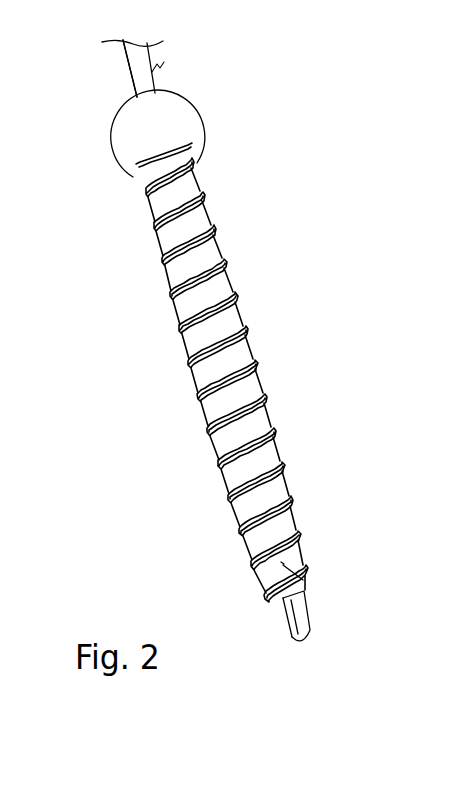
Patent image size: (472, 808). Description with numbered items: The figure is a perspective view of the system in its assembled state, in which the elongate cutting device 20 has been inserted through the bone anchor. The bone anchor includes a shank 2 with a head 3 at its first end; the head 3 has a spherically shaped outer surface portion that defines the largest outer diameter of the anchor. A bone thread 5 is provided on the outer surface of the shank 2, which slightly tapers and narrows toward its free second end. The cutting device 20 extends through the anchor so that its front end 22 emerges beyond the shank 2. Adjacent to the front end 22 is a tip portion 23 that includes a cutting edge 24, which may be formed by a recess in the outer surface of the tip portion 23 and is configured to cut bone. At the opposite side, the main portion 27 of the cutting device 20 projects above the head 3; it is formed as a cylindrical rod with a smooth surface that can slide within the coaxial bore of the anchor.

The shank 2 is at (223, 273).
The head 3 is at (203, 125).
The bone thread 5 is at (185, 342).
The cutting device 20 is at (155, 71).
The front end 22 is at (307, 642).
The tip portion 23 is at (303, 597).
The cutting edge 24 is at (290, 617).
The main portion 27 is at (125, 63).